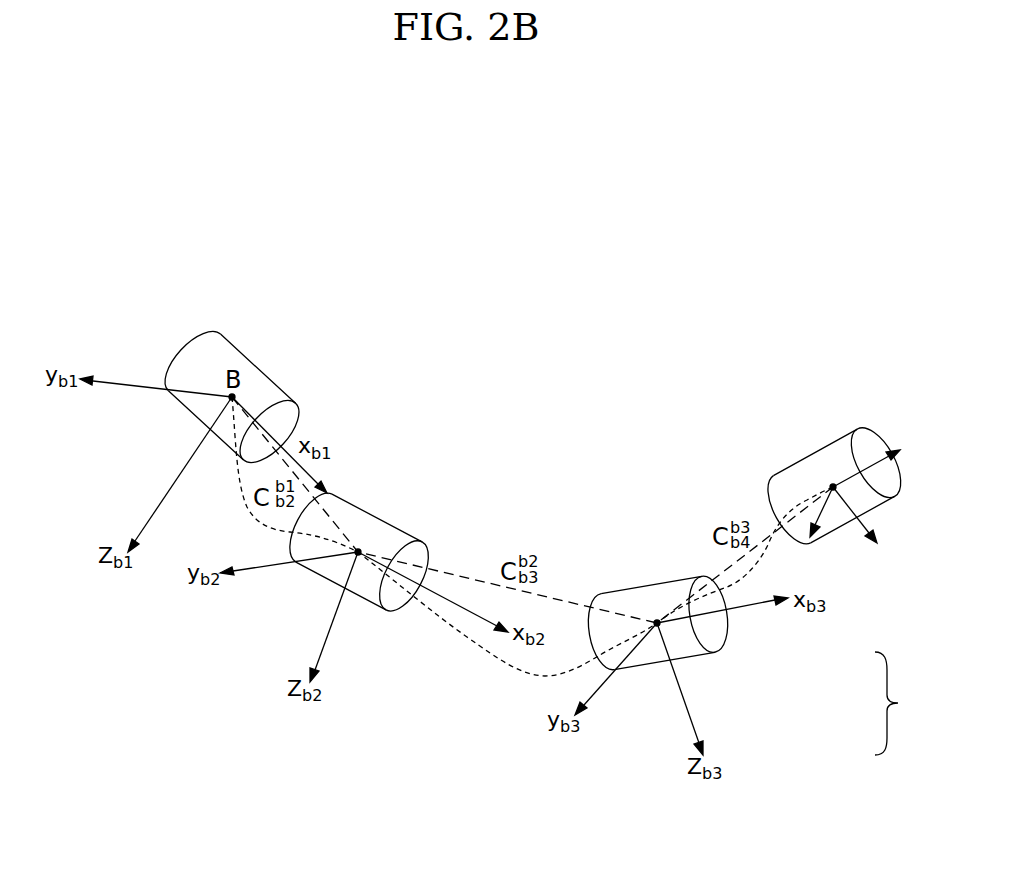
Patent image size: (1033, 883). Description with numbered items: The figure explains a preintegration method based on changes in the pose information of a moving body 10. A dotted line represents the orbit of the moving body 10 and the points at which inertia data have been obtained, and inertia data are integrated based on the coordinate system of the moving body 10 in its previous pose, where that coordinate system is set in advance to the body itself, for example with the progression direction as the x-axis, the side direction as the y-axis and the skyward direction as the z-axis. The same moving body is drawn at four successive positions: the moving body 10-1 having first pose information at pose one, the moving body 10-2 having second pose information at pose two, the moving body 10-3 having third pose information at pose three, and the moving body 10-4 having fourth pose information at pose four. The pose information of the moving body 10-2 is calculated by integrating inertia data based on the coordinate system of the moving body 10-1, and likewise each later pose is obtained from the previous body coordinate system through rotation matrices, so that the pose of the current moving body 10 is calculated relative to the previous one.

The moving body 10 is at (874, 705).
The moving body having first pose information 10-1 is at (295, 401).
The moving body having second pose information 10-2 is at (420, 542).
The moving body having third pose information 10-3 is at (692, 655).
The moving body having fourth pose information 10-4 is at (780, 470).